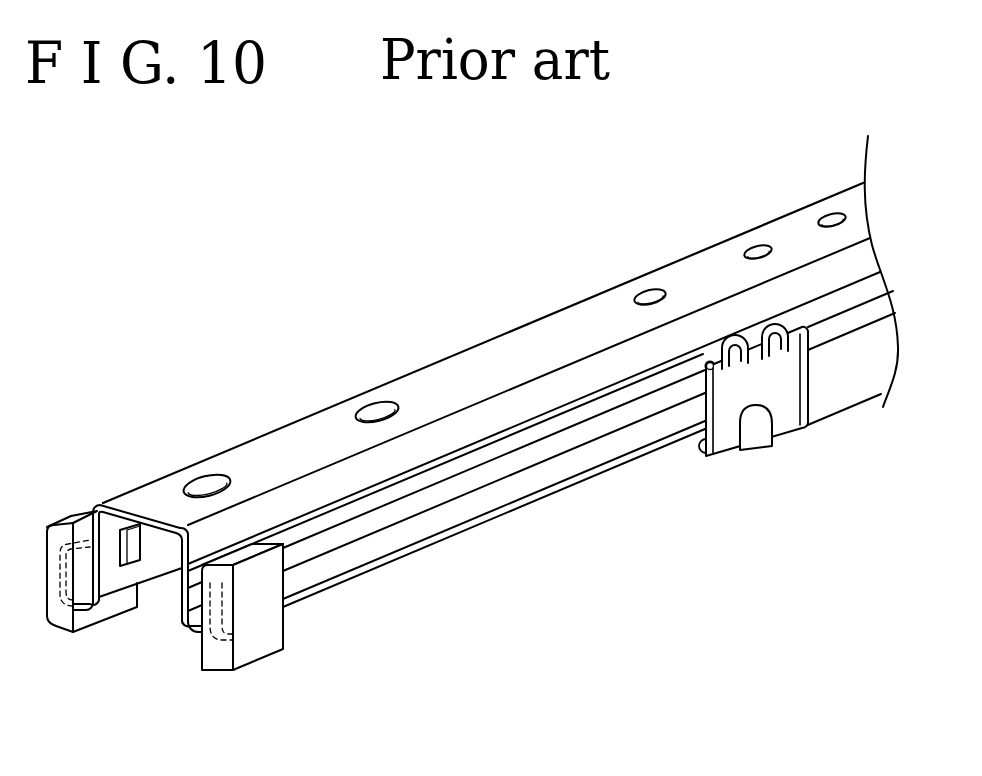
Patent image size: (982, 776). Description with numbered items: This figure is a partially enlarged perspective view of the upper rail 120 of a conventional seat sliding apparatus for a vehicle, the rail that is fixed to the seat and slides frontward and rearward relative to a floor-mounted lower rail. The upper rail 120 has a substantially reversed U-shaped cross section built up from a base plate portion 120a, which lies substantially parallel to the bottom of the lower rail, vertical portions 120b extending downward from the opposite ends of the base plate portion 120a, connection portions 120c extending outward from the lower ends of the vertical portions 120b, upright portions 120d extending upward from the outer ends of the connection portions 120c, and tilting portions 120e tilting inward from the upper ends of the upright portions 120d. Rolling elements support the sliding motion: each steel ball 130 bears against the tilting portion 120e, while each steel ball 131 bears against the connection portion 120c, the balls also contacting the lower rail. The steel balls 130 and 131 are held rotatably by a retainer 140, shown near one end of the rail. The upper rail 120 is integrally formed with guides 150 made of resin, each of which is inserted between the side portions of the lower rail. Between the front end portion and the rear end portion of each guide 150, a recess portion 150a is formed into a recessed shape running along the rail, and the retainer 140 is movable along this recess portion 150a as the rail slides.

The upper rail 120 is at (383, 343).
The base plate portion 120a is at (315, 425).
The vertical portion 120b is at (267, 517).
The connection portion 120c is at (357, 577).
The upright portion 120d is at (415, 535).
The tilting portion 120e is at (493, 477).
The steel ball 130 is at (733, 357).
The steel ball 131 is at (758, 437).
The retainer 140 is at (777, 393).
The guide 150 is at (238, 650).
The recess portion 150a is at (595, 408).